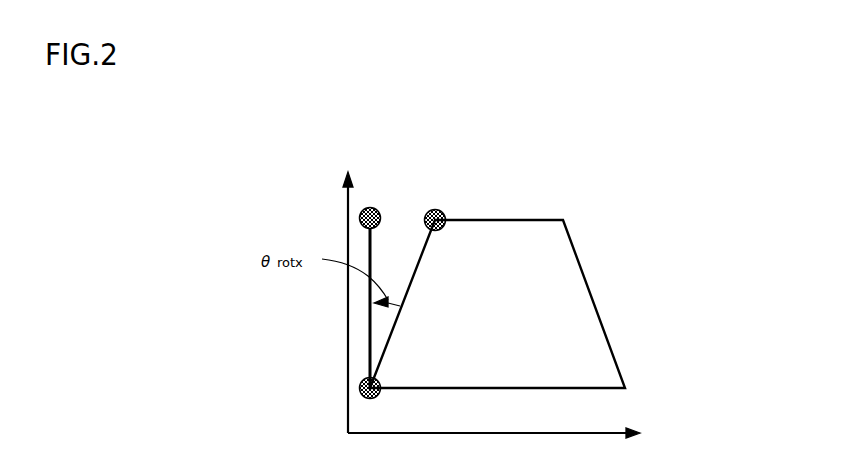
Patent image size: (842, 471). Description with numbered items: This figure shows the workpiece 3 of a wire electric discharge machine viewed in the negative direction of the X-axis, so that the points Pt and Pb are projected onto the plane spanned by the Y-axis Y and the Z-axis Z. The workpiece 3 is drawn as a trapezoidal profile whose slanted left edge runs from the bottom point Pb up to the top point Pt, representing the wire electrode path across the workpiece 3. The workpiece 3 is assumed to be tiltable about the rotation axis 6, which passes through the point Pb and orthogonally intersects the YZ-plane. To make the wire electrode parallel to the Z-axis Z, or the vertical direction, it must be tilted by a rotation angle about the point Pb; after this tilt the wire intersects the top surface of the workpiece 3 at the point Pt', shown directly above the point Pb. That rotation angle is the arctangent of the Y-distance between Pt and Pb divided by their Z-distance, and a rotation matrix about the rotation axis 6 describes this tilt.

The workpiece 3 is at (578, 303).
The rotation axis 6 is at (359, 388).
The point Pt is at (498, 213).
The point Pb is at (375, 397).
The point Pt' is at (412, 266).
The Z-axis Z is at (332, 302).
The Y-axis Y is at (507, 438).